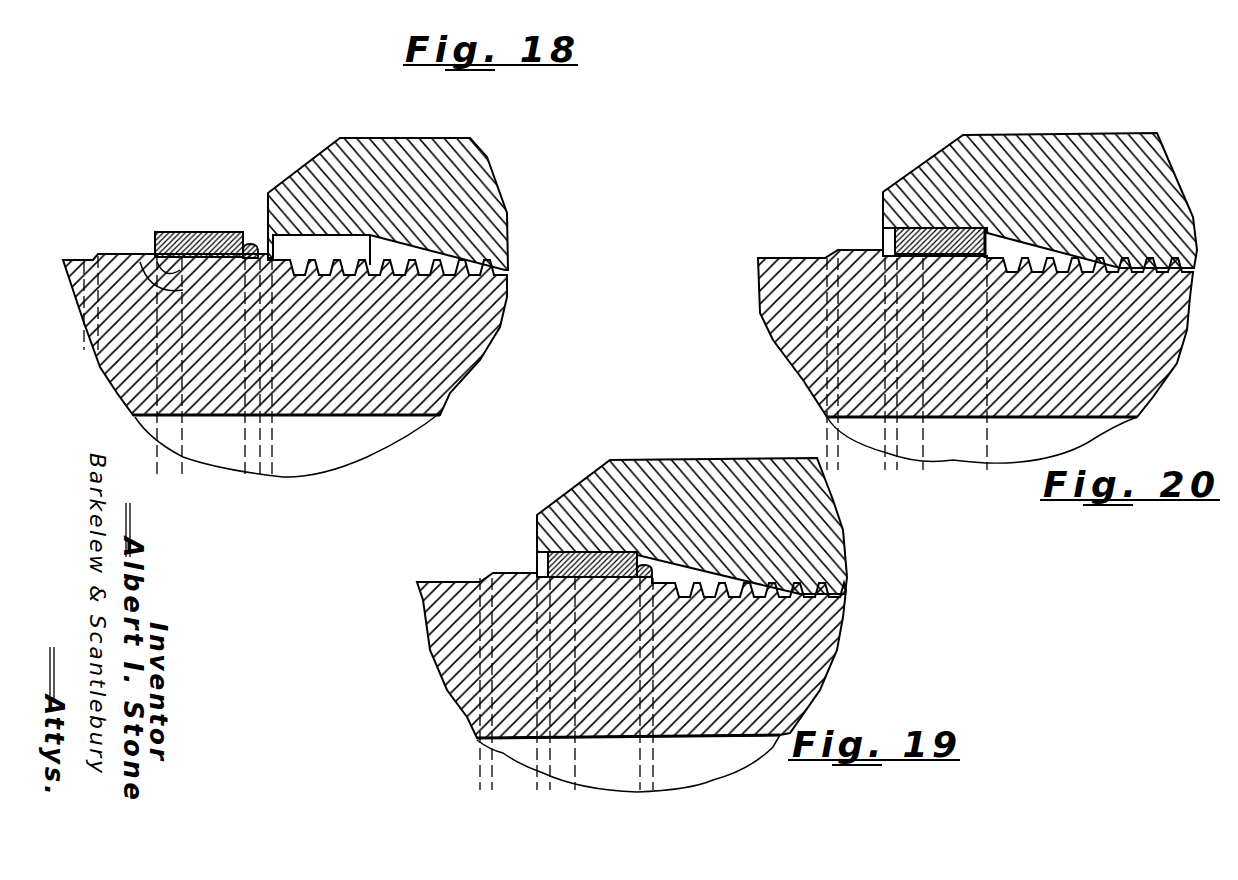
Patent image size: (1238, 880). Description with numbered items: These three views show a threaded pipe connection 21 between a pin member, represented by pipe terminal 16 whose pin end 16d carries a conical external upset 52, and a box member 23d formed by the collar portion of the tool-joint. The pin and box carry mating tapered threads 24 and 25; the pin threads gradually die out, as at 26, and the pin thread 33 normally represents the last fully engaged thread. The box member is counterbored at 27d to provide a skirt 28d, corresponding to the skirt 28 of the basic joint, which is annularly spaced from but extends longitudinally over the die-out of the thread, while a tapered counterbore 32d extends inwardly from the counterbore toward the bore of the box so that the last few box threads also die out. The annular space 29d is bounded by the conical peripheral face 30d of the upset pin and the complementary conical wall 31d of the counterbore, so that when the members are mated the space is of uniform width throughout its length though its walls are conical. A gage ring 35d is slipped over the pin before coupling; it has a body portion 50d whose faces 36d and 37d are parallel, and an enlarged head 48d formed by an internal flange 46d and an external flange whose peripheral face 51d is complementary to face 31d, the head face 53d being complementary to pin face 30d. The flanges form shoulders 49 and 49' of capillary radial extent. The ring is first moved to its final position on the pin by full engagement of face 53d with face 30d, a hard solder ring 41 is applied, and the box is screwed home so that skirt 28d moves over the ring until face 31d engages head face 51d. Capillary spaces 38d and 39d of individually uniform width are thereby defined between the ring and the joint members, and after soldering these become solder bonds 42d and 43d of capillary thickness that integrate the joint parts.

In FIG. 18, the pipe terminal 16 is at (375, 410).
In FIG. 20, the pin end 16d is at (1053, 403).
In FIG. 19, the pin end 16d is at (740, 723).
In FIG. 20, the connection 21 is at (1150, 252).
In FIG. 19, the connection 21 is at (806, 572).
In FIG. 18, the box member 23d is at (460, 162).
In FIG. 20, the box member 23d is at (1100, 153).
In FIG. 19, the box member 23d is at (760, 493).
In FIG. 18, the tapered thread 24 is at (450, 275).
In FIG. 20, the tapered thread 24 is at (1157, 270).
In FIG. 19, the tapered thread 24 is at (807, 600).
In FIG. 18, the tapered thread 25 is at (480, 262).
In FIG. 20, the tapered thread 25 is at (1173, 263).
In FIG. 19, the tapered thread 25 is at (837, 592).
In FIG. 19, the die-out of pin threads 26 is at (677, 633).
In FIG. 18, the counterbore 27d is at (355, 252).
In FIG. 20, the counterbore 27d is at (1018, 240).
In FIG. 20, the skirt 28 is at (955, 162).
In FIG. 18, the skirt 28d is at (353, 160).
In FIG. 19, the skirt 28d is at (577, 502).
In FIG. 20, the annular space 29d is at (883, 237).
In FIG. 19, the annular space 29d is at (535, 570).
In FIG. 18, the peripheral face 30d is at (100, 350).
In FIG. 20, the peripheral face 30d is at (900, 272).
In FIG. 19, the peripheral face 30d is at (645, 565).
In FIG. 18, the wall of counterbore 31d is at (322, 230).
In FIG. 19, the wall of counterbore 31d is at (535, 557).
In FIG. 18, the nut inclined face 32d is at (386, 252).
In FIG. 19, the nut inclined face 32d is at (705, 558).
In FIG. 18, the pin thread 33 is at (420, 275).
In FIG. 20, the pin thread 33 is at (1178, 272).
In FIG. 19, the pin thread 33 is at (823, 600).
In FIG. 20, the ring 35d is at (942, 228).
In FIG. 19, the ring 35d is at (588, 553).
In FIG. 18, the face of body portion 36d is at (210, 231).
In FIG. 18, the face of body portion 37d is at (180, 267).
In FIG. 19, the capillary space 38d is at (673, 570).
In FIG. 19, the capillary space 39d is at (603, 633).
In FIG. 18, the hard solder ring 41 is at (268, 193).
In FIG. 20, the solder bond 42d is at (957, 228).
In FIG. 20, the solder bond 43d is at (975, 280).
In FIG. 18, the internal annular flange 46d is at (165, 280).
In FIG. 18, the head 48d is at (153, 262).
In FIG. 20, the head 48d is at (912, 230).
In FIG. 18, the shoulder 49 is at (199, 223).
In FIG. 18, the shoulder 49' is at (103, 341).
In FIG. 18, the body portion 50d is at (250, 243).
In FIG. 20, the body portion 50d is at (973, 238).
In FIG. 18, the peripheral face of head 51d is at (163, 260).
In FIG. 19, the peripheral face of head 51d is at (556, 553).
In FIG. 20, the conical external upset 52 is at (880, 270).
In FIG. 19, the conical external upset 52 is at (487, 600).
In FIG. 18, the face of head 53d is at (150, 268).
In FIG. 19, the face of head 53d is at (510, 620).